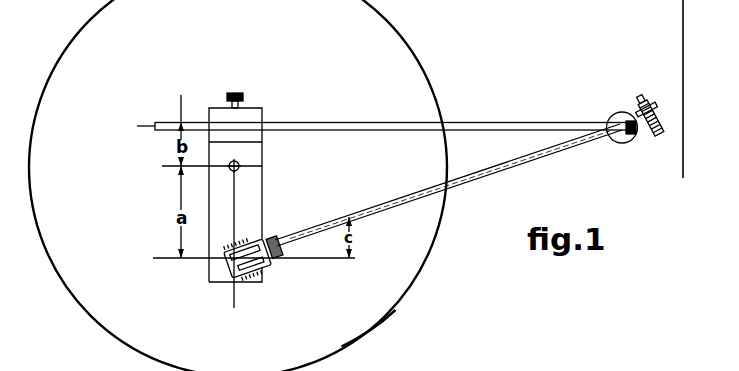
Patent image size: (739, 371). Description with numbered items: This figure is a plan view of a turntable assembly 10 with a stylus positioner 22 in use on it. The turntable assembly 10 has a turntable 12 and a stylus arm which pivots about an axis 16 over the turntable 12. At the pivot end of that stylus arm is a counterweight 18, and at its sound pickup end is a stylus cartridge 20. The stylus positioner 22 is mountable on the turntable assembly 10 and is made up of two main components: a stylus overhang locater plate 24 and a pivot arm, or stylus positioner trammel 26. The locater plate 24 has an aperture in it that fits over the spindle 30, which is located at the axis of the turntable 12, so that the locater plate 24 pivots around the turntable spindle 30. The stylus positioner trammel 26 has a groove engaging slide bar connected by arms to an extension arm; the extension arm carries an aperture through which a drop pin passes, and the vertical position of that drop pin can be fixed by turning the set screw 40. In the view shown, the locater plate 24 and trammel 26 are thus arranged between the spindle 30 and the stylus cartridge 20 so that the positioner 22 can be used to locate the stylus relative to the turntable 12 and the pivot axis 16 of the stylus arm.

The turntable assembly 10 is at (414, 298).
The turntable 12 is at (369, 331).
The axis 16 is at (609, 143).
The counterweight 18 is at (645, 100).
The stylus cartridge 20 is at (258, 270).
The stylus positioner 22 is at (530, 109).
The stylus overhang locater plate 24 is at (270, 215).
The stylus positioner trammel 26 is at (390, 121).
The spindle 30 is at (239, 164).
The set screw 40 is at (632, 121).